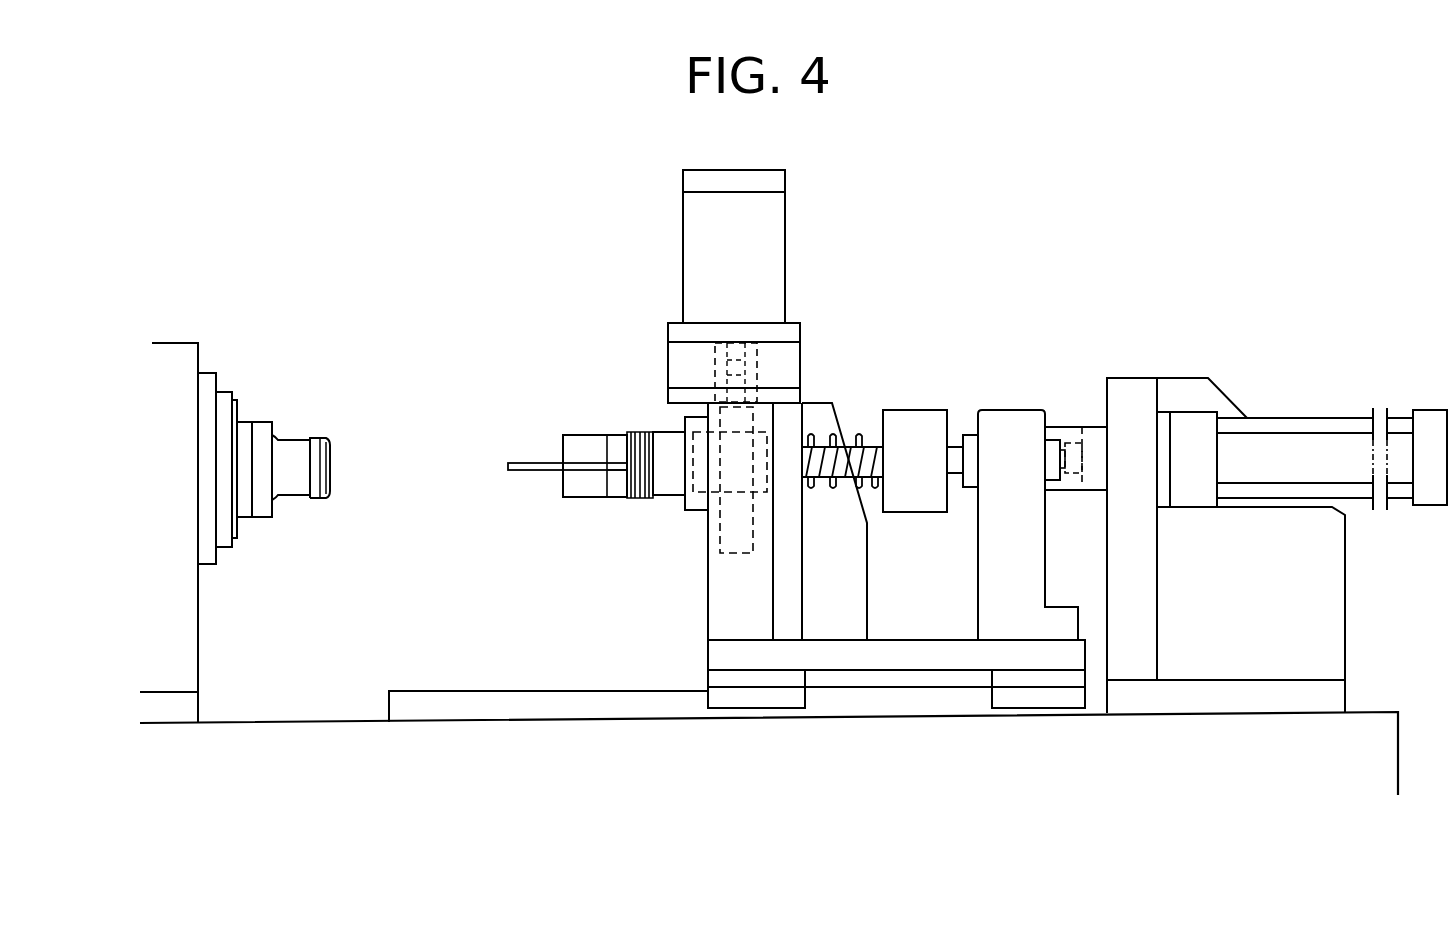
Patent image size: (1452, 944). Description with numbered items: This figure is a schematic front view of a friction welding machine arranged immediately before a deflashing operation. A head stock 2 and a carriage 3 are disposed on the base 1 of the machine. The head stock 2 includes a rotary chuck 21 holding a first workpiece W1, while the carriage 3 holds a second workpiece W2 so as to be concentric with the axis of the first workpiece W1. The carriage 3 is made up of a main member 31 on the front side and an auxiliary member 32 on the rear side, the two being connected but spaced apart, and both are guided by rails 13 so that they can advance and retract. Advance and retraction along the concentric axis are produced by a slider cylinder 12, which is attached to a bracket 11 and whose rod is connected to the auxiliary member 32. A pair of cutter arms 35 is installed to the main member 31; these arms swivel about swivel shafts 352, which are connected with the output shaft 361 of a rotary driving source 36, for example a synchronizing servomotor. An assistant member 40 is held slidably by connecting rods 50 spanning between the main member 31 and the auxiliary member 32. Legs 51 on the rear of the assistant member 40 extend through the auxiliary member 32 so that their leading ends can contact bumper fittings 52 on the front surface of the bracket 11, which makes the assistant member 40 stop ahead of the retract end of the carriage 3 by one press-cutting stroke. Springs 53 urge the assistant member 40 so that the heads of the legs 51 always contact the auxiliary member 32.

The base 1 is at (292, 740).
The head stock 2 is at (180, 360).
The rotary chuck 21 is at (315, 435).
The carriage 3 is at (907, 658).
The bracket 11 is at (1130, 397).
The slider cylinder 12 is at (1337, 428).
The rails 13 is at (502, 705).
The main member 31 is at (720, 623).
The auxiliary member 32 is at (1018, 435).
The cutter arms 35 is at (580, 448).
The swivel shafts 352 is at (730, 537).
The rotary driving source 36 is at (767, 218).
The output shaft 361 is at (823, 340).
The assistant member 40 is at (923, 432).
The connecting rods 50 is at (955, 472).
The legs 51 is at (1070, 487).
The bumper fittings 52 is at (1082, 430).
The springs 53 is at (870, 438).
The first workpiece W1 is at (522, 465).
The second workpiece W2 is at (623, 498).